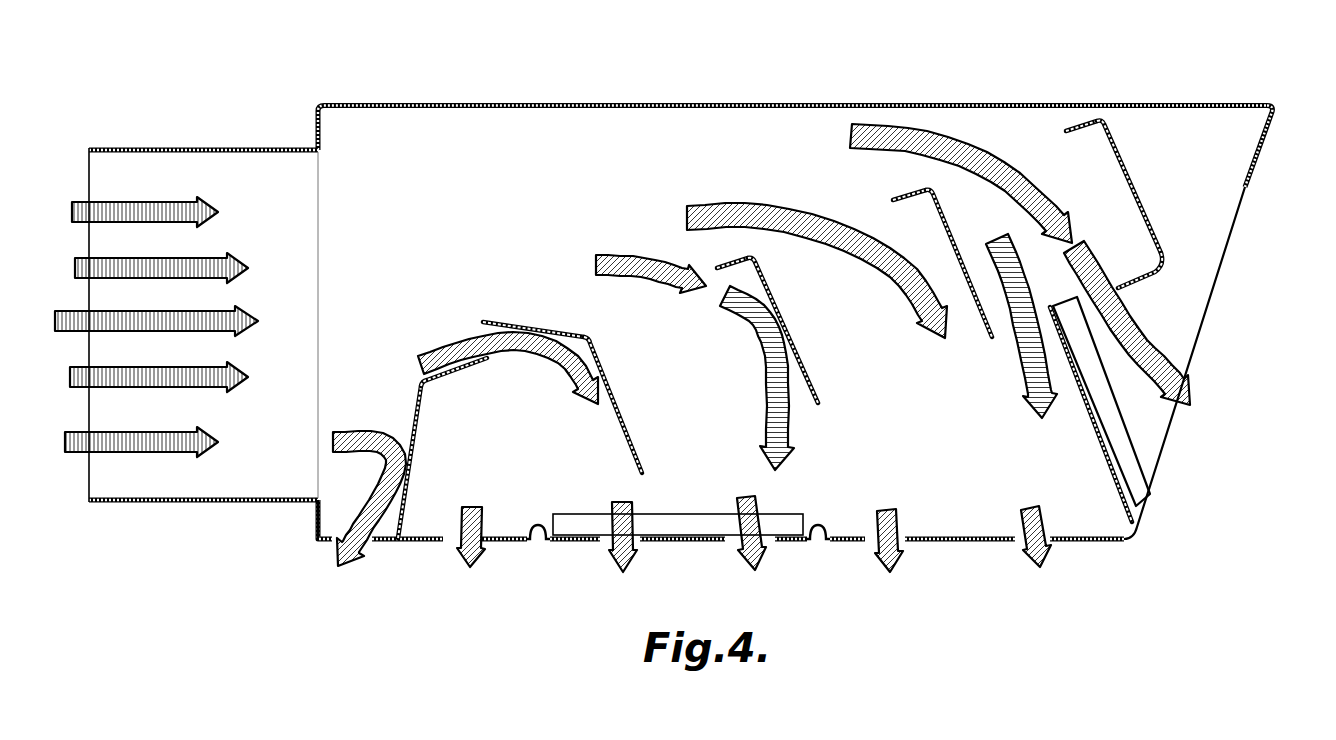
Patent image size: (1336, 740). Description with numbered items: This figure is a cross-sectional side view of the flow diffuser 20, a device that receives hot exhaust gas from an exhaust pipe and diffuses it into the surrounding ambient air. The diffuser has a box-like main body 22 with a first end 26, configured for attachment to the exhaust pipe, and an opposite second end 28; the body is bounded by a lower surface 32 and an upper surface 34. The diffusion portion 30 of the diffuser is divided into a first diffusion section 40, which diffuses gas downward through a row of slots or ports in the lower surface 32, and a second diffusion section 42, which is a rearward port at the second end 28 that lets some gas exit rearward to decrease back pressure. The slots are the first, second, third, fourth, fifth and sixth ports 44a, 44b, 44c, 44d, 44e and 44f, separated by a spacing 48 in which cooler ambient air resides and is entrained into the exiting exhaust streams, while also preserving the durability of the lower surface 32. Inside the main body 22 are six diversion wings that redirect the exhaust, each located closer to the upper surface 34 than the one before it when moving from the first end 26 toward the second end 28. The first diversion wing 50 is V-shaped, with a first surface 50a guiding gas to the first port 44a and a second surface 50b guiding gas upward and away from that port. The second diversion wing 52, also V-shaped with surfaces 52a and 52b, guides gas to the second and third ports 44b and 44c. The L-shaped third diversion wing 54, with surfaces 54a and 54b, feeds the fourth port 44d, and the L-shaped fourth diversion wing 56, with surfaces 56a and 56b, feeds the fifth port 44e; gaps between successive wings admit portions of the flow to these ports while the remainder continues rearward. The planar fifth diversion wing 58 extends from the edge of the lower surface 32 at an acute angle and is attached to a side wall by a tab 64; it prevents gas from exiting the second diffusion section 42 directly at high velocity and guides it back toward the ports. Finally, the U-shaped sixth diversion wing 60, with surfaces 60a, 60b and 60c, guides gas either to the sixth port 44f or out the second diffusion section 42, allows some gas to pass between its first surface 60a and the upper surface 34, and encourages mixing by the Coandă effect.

The flow diffuser 20 is at (782, 66).
The main body 22 is at (868, 104).
The first end 26 is at (88, 172).
The second end 28 is at (1259, 150).
The diffusion portion 30 is at (316, 513).
The lower surface 32 is at (1095, 544).
The upper surface 34 is at (1098, 104).
The first diffusion section 40 is at (420, 600).
The second diffusion section 42 is at (1243, 204).
The first port 44a is at (325, 545).
The second port 44b is at (448, 542).
The third port 44c is at (600, 542).
The fourth port 44d is at (733, 542).
The fifth port 44e is at (868, 542).
The sixth port 44f is at (1015, 542).
The spacing 48 is at (815, 532).
The first diversion wing 50 is at (472, 435).
The first surface of first diversion wing 50a is at (414, 450).
The second surface of first diversion wing 50b is at (461, 370).
The second diversion wing 52 is at (594, 374).
The first surface of second diversion wing 52a is at (516, 326).
The second surface of second diversion wing 52b is at (640, 453).
The third diversion wing 54 is at (812, 336).
The first surface of third diversion wing 54a is at (732, 265).
The second surface of third diversion wing 54b is at (791, 340).
The fourth diversion wing 56 is at (961, 271).
The first surface of fourth diversion wing 56a is at (905, 198).
The second surface of fourth diversion wing 56b is at (985, 335).
The fifth diversion wing 58 is at (1092, 430).
The sixth diversion wing 60 is at (1110, 260).
The first surface of sixth diversion wing 60a is at (1068, 128).
The second surface of sixth diversion wing 60b is at (1141, 205).
The third surface of sixth diversion wing 60c is at (1145, 280).
The tab 64 is at (1130, 445).